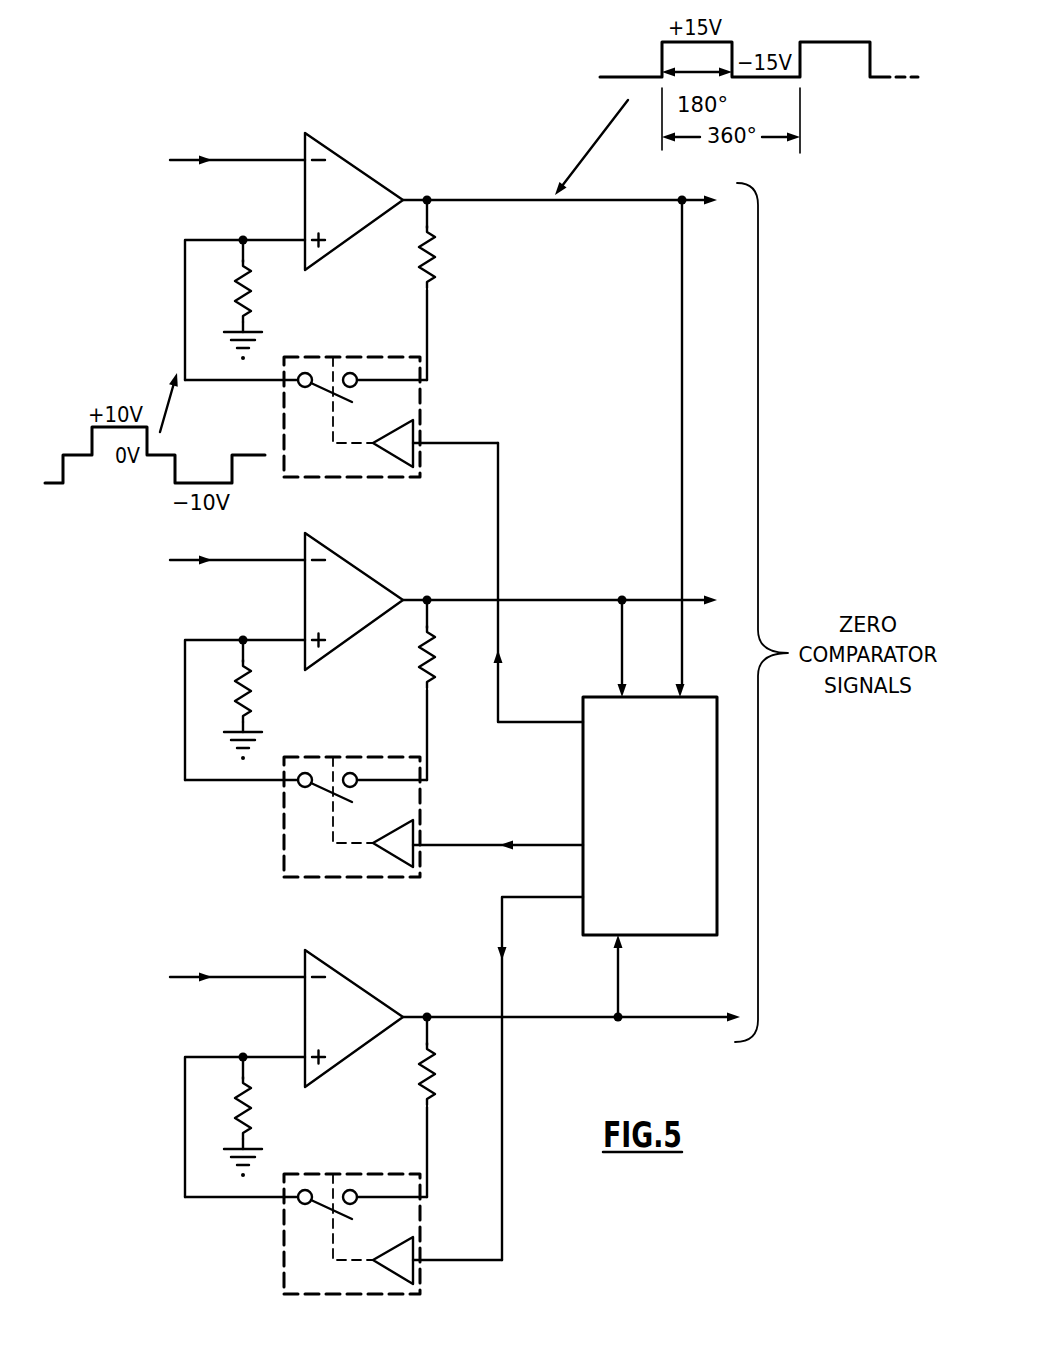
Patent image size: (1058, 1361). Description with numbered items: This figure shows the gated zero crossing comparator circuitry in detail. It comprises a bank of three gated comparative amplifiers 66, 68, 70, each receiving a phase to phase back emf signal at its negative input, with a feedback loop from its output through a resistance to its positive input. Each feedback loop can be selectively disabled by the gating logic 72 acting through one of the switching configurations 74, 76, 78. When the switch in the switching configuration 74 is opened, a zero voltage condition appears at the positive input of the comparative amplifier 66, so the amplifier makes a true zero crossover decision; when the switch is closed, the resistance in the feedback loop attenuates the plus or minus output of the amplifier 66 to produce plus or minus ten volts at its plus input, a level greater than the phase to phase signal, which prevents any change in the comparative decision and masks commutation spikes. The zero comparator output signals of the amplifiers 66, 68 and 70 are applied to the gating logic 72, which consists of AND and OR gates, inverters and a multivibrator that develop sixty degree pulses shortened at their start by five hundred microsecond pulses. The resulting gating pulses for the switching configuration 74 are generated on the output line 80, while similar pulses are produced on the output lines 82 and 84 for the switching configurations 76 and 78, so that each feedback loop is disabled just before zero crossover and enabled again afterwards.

The gated comparative amplifier 66 is at (330, 145).
The gated comparative amplifier 68 is at (268, 646).
The gated comparative amplifier 70 is at (268, 1063).
The gating logic 72 is at (583, 767).
The switching configuration 74 is at (420, 467).
The switching configuration 76 is at (340, 822).
The switching configuration 78 is at (343, 1239).
The output line 80 is at (500, 683).
The output line 82 is at (482, 847).
The output line 84 is at (504, 933).